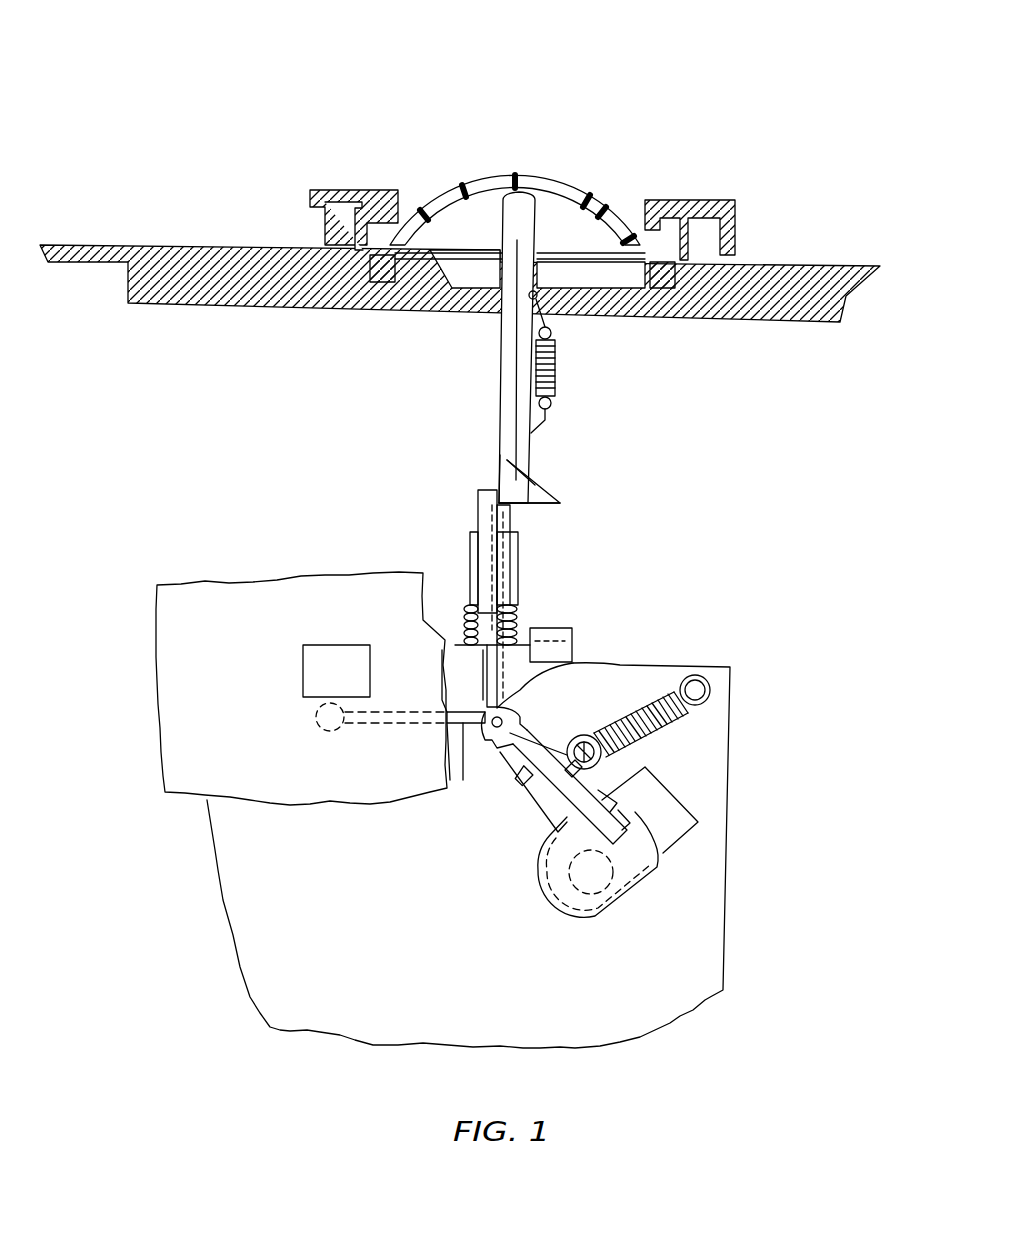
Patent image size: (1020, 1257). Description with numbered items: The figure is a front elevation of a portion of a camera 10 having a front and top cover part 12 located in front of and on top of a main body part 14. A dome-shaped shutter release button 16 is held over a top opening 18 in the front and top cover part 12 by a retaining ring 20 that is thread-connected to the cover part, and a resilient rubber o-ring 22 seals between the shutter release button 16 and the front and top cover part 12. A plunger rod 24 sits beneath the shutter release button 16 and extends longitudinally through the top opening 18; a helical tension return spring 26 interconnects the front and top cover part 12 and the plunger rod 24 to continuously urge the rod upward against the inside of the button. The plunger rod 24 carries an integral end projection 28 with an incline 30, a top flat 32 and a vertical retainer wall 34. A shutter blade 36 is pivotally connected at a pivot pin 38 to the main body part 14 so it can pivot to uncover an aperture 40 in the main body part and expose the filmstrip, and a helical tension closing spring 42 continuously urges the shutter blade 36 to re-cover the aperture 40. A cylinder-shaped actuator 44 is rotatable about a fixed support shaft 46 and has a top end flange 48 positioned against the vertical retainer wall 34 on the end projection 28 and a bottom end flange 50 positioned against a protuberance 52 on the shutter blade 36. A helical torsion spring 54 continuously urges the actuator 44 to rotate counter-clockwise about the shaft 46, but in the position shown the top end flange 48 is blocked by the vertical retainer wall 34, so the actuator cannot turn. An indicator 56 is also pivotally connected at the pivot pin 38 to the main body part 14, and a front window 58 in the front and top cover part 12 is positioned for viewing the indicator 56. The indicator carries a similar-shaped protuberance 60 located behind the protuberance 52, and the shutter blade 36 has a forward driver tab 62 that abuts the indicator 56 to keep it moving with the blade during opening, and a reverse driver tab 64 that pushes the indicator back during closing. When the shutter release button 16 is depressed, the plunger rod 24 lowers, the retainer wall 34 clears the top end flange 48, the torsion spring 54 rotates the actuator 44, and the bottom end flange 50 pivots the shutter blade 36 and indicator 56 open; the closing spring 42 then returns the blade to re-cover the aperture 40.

The camera 10 is at (245, 110).
The front and top cover part 12 is at (88, 245).
The main body part 14 is at (275, 998).
The shutter release button 16 is at (562, 186).
The top opening 18 is at (538, 296).
The retaining ring 20 is at (345, 190).
The o-ring 22 is at (380, 278).
The plunger rod 24 is at (490, 212).
The return spring 26 is at (556, 366).
The end projection 28 is at (568, 506).
The incline 30 is at (548, 490).
The top flat 32 is at (508, 460).
The vertical retainer wall 34 is at (499, 475).
The shutter blade 36 is at (665, 848).
The pivot pin 38 is at (497, 762).
The aperture 40 is at (575, 885).
The closing spring 42 is at (680, 727).
The actuator 44 is at (522, 560).
The support shaft 46 is at (506, 512).
The top end flange 48 is at (478, 500).
The bottom end flange 50 is at (455, 692).
The protuberance 52 is at (505, 705).
The torsion spring 54 is at (462, 630).
The indicator 56 is at (348, 722).
The front window 58 is at (313, 672).
The protuberance 60 is at (572, 662).
The forward driver tab 62 is at (628, 813).
The reverse driver tab 64 is at (518, 785).